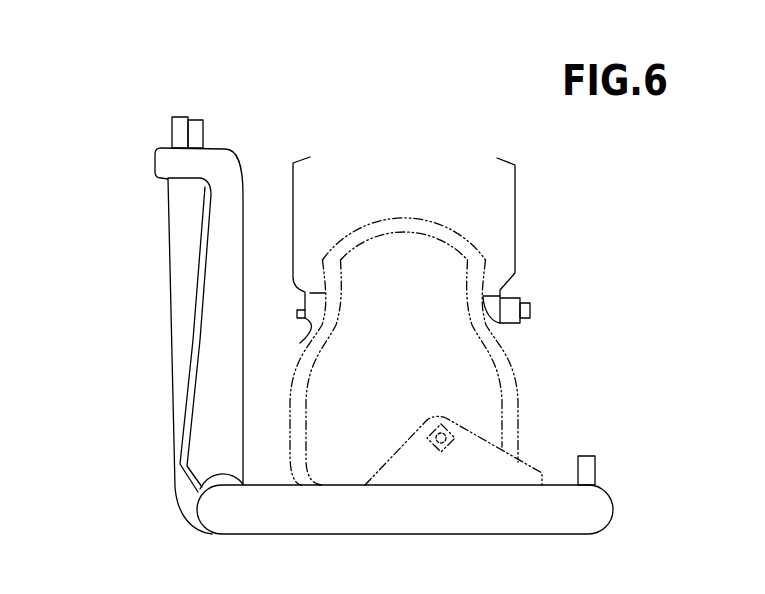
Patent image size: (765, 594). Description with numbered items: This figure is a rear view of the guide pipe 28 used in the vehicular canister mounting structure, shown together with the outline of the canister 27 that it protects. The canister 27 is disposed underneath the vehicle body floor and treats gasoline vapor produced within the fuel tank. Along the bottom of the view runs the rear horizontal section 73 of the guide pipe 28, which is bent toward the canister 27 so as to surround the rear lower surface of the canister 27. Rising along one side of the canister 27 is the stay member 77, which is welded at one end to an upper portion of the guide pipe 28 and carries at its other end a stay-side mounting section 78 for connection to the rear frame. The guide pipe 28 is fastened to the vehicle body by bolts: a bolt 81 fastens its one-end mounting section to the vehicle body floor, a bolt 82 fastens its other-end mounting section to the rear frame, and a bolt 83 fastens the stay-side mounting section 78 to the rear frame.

The vehicular canister 27 is at (410, 99).
The guide pipe 28 is at (141, 309).
The rear horizontal section 73 is at (508, 500).
The stay member 77 is at (170, 339).
The stay-side mounting section 78 is at (168, 148).
The bolt 81 is at (586, 456).
The bolt 82 is at (197, 120).
The bolt 83 is at (181, 117).